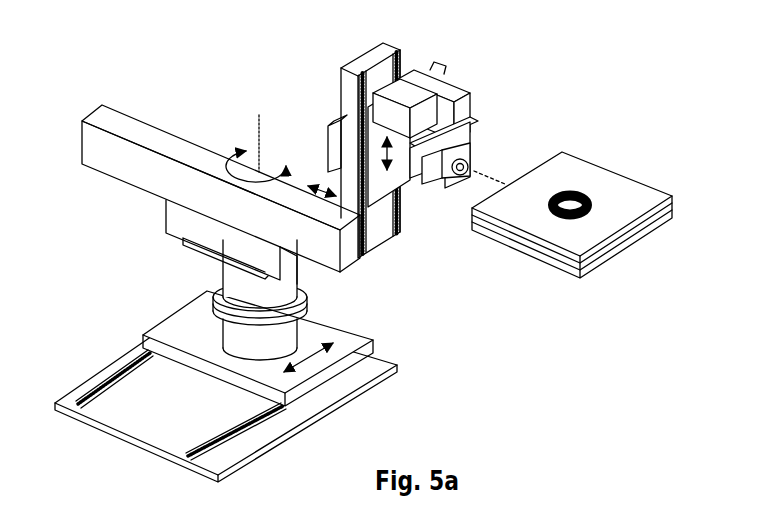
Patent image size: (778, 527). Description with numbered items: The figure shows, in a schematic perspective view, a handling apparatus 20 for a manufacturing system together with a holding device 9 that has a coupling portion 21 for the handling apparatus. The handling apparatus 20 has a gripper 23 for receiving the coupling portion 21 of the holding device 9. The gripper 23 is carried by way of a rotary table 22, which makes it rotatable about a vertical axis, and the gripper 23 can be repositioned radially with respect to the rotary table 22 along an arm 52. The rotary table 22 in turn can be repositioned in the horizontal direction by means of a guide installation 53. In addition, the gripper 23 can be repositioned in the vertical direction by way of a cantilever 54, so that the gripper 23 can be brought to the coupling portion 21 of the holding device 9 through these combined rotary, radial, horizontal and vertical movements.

The holding device 9 is at (649, 167).
The handling apparatus 20 is at (242, 81).
The coupling portion 21 is at (506, 185).
The rotary table 22 is at (301, 291).
The gripper 23 is at (452, 178).
The arm 52 is at (117, 167).
The guide installation 53 is at (127, 340).
The cantilever 54 is at (403, 55).